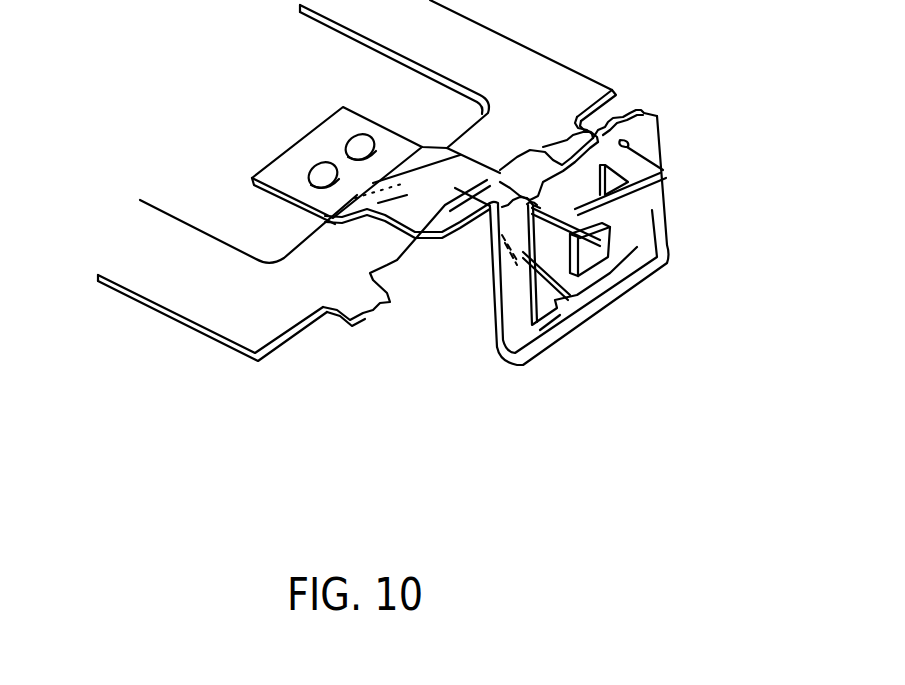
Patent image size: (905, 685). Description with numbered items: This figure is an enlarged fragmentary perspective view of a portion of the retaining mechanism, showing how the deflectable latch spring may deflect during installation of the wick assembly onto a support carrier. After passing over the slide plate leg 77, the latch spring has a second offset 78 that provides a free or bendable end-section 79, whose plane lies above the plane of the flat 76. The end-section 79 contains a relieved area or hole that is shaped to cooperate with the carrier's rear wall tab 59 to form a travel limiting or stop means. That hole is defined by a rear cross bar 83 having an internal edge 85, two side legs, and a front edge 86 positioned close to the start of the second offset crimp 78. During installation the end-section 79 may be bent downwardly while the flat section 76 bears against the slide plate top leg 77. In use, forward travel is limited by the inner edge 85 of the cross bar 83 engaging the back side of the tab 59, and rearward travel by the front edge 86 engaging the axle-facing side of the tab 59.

The rear wall tab 59 is at (588, 247).
The flat 76 is at (405, 198).
The slide plate leg 77 is at (323, 270).
The second offset 78 is at (503, 170).
The free end-section 79 is at (640, 263).
The rear cross bar 83 is at (600, 275).
The internal edge 85 is at (576, 276).
The front edge 86 is at (457, 195).